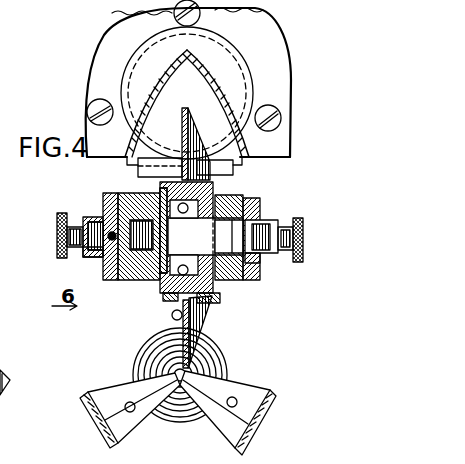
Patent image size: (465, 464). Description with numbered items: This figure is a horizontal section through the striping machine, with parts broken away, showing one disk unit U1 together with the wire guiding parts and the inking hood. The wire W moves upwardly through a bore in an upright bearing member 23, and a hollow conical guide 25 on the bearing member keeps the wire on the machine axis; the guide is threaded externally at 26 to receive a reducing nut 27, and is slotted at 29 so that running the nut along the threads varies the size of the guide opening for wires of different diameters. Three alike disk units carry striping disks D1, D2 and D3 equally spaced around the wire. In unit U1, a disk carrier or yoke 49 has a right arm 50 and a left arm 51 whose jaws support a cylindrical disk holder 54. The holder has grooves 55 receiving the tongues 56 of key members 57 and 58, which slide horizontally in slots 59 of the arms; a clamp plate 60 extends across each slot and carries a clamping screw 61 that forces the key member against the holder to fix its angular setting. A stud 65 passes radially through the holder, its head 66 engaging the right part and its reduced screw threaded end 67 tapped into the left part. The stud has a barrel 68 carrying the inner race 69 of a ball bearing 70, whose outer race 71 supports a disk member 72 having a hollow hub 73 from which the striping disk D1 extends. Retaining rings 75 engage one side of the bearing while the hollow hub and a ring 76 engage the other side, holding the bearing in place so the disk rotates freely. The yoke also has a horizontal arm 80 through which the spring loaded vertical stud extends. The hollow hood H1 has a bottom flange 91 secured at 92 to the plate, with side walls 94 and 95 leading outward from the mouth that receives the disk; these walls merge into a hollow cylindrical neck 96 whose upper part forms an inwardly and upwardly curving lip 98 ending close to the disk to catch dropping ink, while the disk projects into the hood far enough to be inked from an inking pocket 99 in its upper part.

The bottom flange 91 is at (274, 70).
The securing point 92 is at (182, 18).
The inking pocket 99 is at (182, 72).
The hollow hood H1 is at (207, 44).
The side wall 95 is at (162, 83).
The side wall 94 is at (213, 92).
The hollow cylindrical neck 96 is at (232, 143).
The curving lip 98 is at (262, 158).
The striping disk D1 is at (189, 128).
The retaining rings 75 is at (164, 162).
The slots 59 is at (106, 210).
The key member 58 is at (112, 205).
The reduced screw threaded end 67 is at (130, 204).
The grooves 55 is at (94, 222).
The clamping screw 61 is at (303, 233).
The clamp plate 60 is at (84, 258).
The left arm 51 is at (104, 274).
The head 66 is at (231, 221).
The tongues 56 is at (253, 206).
The right arm 50 is at (258, 218).
The key member 57 is at (280, 228).
The inner race 69 is at (169, 252).
The ball bearing 70 is at (226, 243).
The disk unit U1 is at (250, 276).
The disk carrier or yoke 49 is at (114, 282).
The stud 65 is at (167, 273).
The hollow hub 73 is at (140, 303).
The horizontal arm 80 is at (162, 296).
The ring 76 is at (212, 283).
The barrel 68 is at (237, 278).
The outer race 71 is at (198, 318).
The disk member 72 is at (200, 330).
The disk holder 54 is at (230, 296).
The hollow conical guide 25 is at (155, 368).
The upright bearing member 23 is at (213, 346).
The reducing nut 27 is at (210, 364).
The wire W is at (203, 377).
The striping disk D3 is at (122, 386).
The striping disk D2 is at (212, 412).
The external threads 26 is at (166, 398).
The slot 29 is at (178, 398).